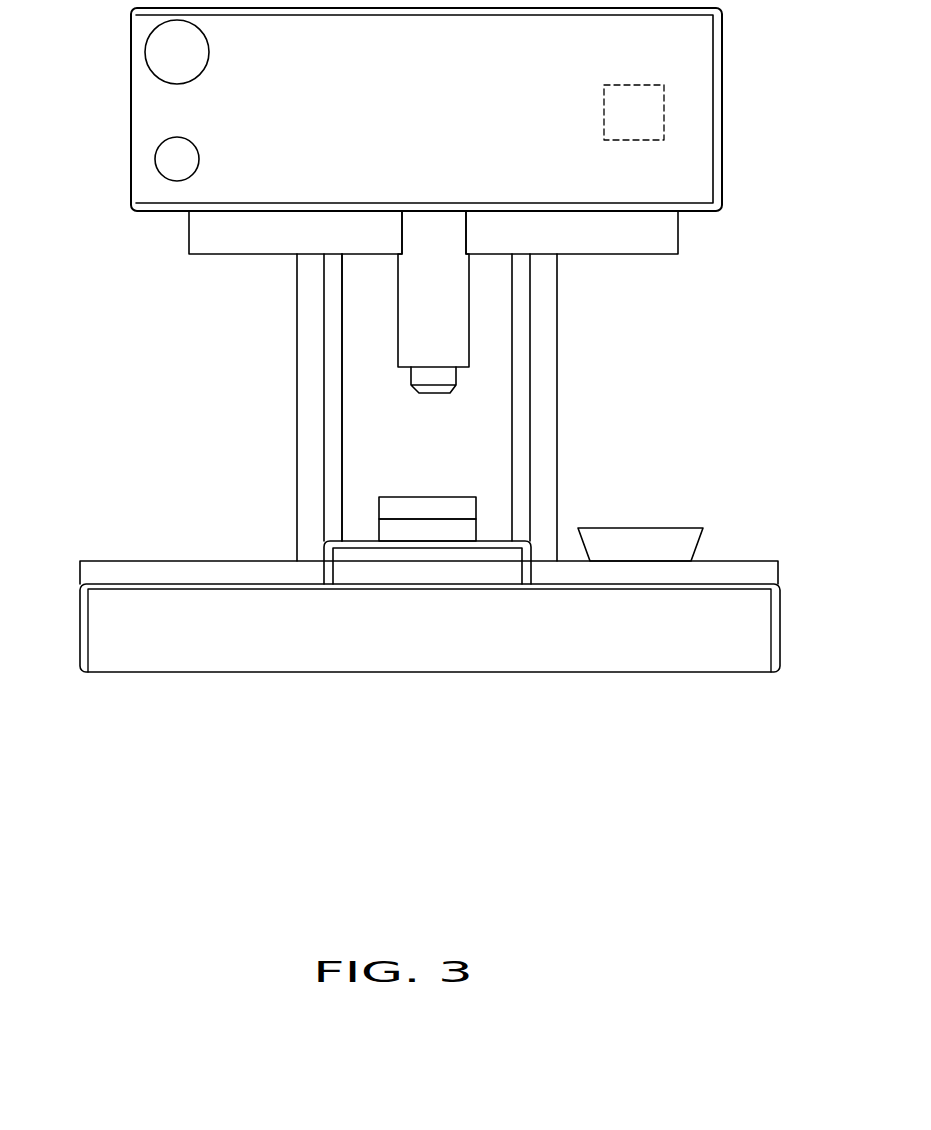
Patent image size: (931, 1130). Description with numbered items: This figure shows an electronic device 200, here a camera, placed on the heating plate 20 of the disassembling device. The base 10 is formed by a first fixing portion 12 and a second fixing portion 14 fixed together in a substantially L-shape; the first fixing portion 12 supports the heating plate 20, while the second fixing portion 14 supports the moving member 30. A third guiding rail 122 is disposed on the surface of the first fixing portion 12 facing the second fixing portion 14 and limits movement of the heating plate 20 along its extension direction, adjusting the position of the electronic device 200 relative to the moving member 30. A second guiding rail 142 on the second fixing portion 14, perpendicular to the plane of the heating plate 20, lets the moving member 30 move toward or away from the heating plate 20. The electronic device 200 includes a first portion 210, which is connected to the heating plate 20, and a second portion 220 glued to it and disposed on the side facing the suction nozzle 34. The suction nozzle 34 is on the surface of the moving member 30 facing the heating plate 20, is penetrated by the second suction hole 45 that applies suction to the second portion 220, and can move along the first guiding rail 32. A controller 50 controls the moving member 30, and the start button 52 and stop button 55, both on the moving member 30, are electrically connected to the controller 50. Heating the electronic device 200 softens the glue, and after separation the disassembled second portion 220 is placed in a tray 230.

The base 10 is at (407, 463).
The first fixing portion 12 is at (272, 607).
The second fixing portion 14 is at (377, 407).
The second guiding rail 142 is at (337, 331).
The third guiding rail 122 is at (128, 566).
The heating plate 20 is at (427, 563).
The moving member 30 is at (419, 109).
The first guiding rail 32 is at (657, 240).
The suction nozzle 34 is at (448, 292).
The second suction hole 45 is at (437, 393).
The controller 50 is at (638, 108).
The start button 52 is at (175, 165).
The stop button 55 is at (175, 52).
The electronic device 200 is at (574, 492).
The first portion 210 is at (458, 531).
The second portion 220 is at (458, 505).
The tray 230 is at (681, 540).